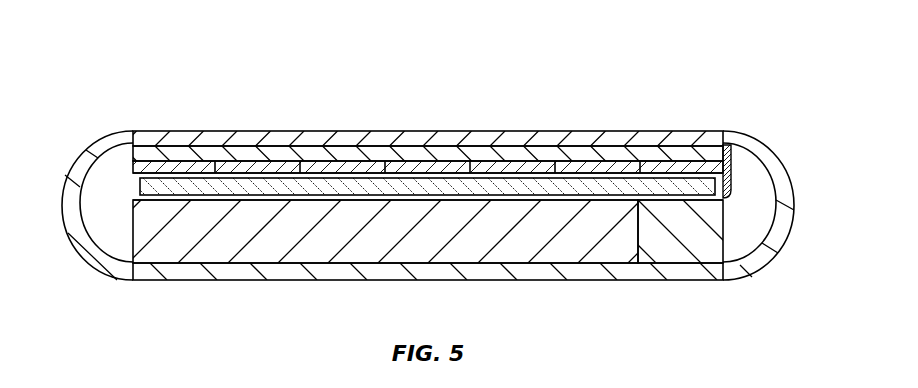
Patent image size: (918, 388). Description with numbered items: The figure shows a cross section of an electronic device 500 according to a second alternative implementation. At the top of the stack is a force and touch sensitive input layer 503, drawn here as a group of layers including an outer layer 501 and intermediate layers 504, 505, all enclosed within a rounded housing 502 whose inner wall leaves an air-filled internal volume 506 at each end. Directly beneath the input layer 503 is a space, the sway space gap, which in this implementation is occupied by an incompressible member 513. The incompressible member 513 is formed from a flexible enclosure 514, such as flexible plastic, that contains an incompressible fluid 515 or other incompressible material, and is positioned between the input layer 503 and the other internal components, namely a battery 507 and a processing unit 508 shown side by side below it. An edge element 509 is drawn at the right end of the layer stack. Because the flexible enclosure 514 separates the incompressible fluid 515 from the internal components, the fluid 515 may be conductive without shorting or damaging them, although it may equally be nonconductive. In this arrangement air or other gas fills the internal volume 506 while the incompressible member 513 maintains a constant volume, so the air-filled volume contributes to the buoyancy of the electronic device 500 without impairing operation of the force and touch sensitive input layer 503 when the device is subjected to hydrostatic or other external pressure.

The electronic device 500 is at (107, 58).
The display cover layer 501 is at (223, 131).
The housing 502 is at (433, 205).
The force and touch sensitive input layer 503 is at (133, 131).
The display layer 504 is at (350, 148).
The display panel layer 505 is at (518, 163).
The internal volume 506 is at (93, 228).
The battery 507 is at (350, 264).
The processing unit 508 is at (687, 264).
The edge seal member 509 is at (732, 174).
The incompressible member 513 is at (133, 200).
The flexible enclosure 514 is at (598, 172).
The incompressible fluid 515 is at (662, 186).